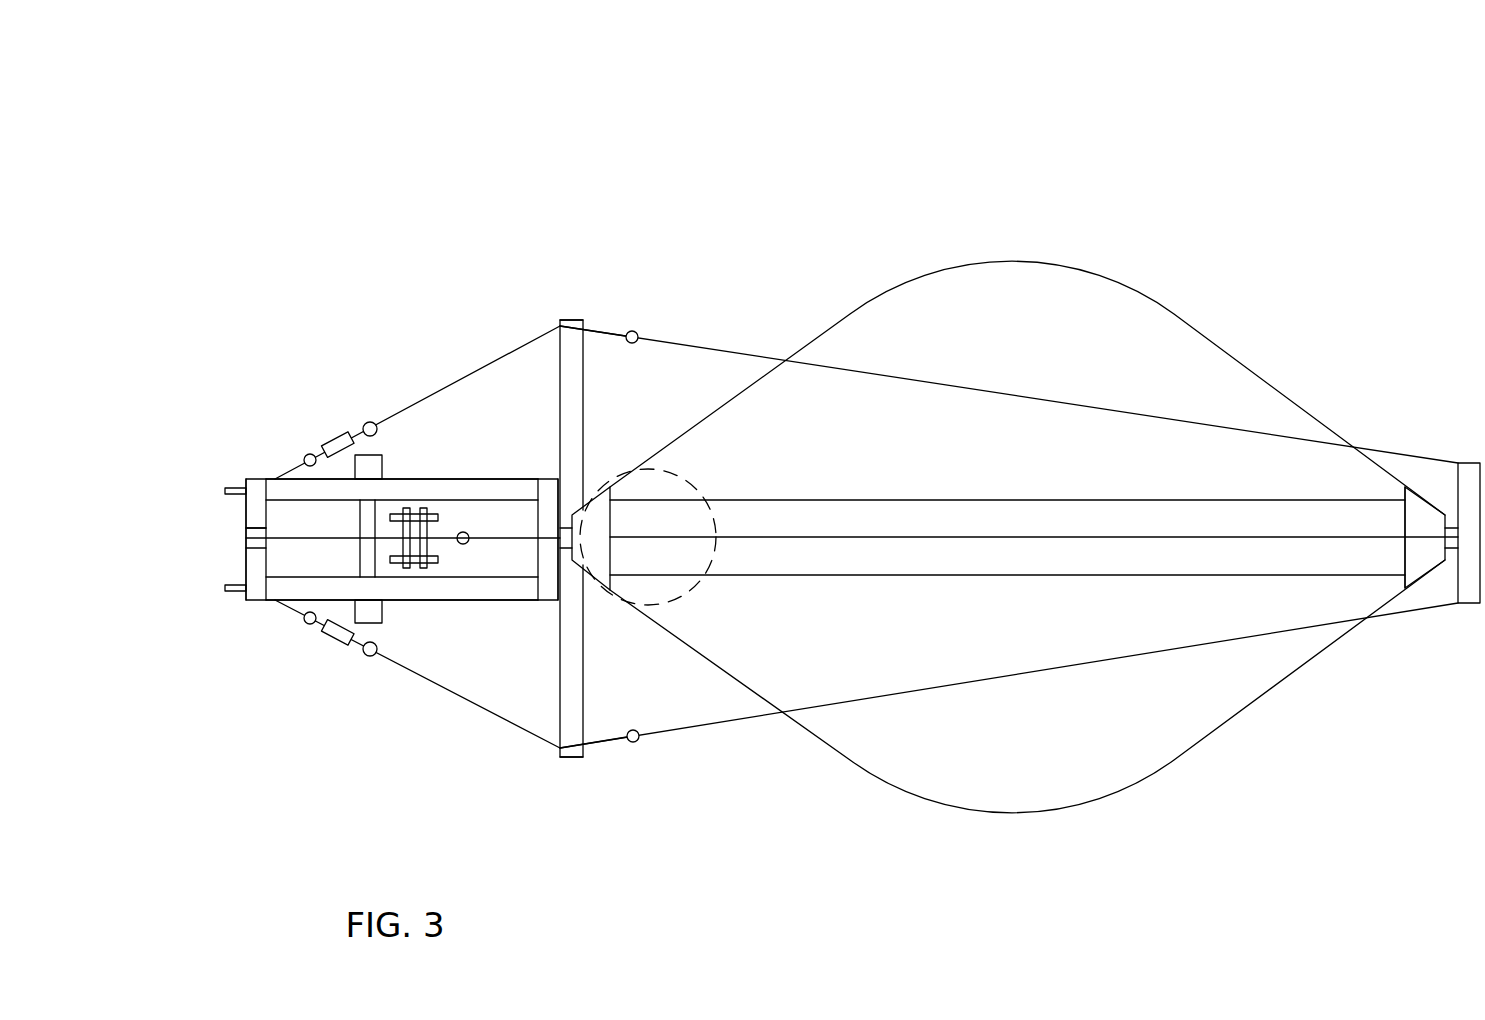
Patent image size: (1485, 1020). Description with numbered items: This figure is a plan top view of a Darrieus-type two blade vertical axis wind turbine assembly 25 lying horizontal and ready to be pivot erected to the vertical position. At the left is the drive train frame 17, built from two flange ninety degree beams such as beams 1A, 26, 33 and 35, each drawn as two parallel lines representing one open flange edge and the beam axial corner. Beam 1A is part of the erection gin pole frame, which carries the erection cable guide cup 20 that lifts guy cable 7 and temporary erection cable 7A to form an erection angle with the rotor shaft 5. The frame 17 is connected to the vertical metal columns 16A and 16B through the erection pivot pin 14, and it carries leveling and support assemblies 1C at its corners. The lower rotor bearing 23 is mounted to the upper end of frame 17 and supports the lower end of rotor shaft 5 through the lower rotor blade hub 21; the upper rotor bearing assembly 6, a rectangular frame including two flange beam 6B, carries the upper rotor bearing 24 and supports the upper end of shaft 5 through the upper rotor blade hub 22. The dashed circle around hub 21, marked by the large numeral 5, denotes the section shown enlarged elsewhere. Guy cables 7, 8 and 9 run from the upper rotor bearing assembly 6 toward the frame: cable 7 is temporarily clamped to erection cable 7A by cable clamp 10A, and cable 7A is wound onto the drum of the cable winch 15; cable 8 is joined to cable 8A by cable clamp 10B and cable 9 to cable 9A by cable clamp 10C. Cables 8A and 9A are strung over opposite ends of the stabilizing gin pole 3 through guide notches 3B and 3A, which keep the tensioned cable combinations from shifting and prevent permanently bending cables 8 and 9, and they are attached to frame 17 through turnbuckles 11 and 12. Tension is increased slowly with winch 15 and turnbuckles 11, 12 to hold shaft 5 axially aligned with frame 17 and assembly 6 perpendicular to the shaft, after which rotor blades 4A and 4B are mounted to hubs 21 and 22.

The two flange 90 degree beam 1A is at (260, 600).
The leveling and support assembly 1C is at (232, 466).
The stabilizing gin pole 3 is at (581, 502).
The guide notch 3A is at (558, 757).
The guide notch 3B is at (560, 325).
The rotor blade 4A is at (1246, 700).
The rotor blade 4B is at (1143, 295).
The rotor shaft 5 is at (833, 500).
The upper rotor bearing assembly 6 is at (1392, 402).
The two flange beam 6B is at (1466, 460).
The guy cable 7 is at (1085, 537).
The temporary erection cable 7A is at (280, 538).
The guy cable 8 is at (955, 387).
The cable 8A is at (606, 332).
The guy cable 9 is at (712, 724).
The cable 9A is at (532, 735).
The cable clamp 10A is at (465, 532).
The cable clamp 10B is at (636, 331).
The cable clamp 10C is at (635, 742).
The turnbuckle 11 is at (335, 437).
The turnbuckle 12 is at (332, 637).
The erection pivot pin 14 is at (360, 563).
The cable winch 15 is at (440, 560).
The vertical metal column 16A is at (381, 624).
The vertical metal column 16B is at (383, 452).
The drive train frame 17 is at (529, 284).
The erection cable guide cup 20 is at (246, 541).
The lower rotor blade hub 21 is at (640, 488).
The upper rotor blade hub 22 is at (1385, 490).
The lower rotor bearing 23 is at (572, 515).
The upper rotor bearing 24 is at (1453, 548).
The vertical axis wind turbine assembly 25 is at (1295, 163).
The two flange 90 degree beam 26 is at (420, 600).
The two flange 90 degree beam 33 is at (548, 600).
The two flange 90 degree beam 35 is at (470, 478).